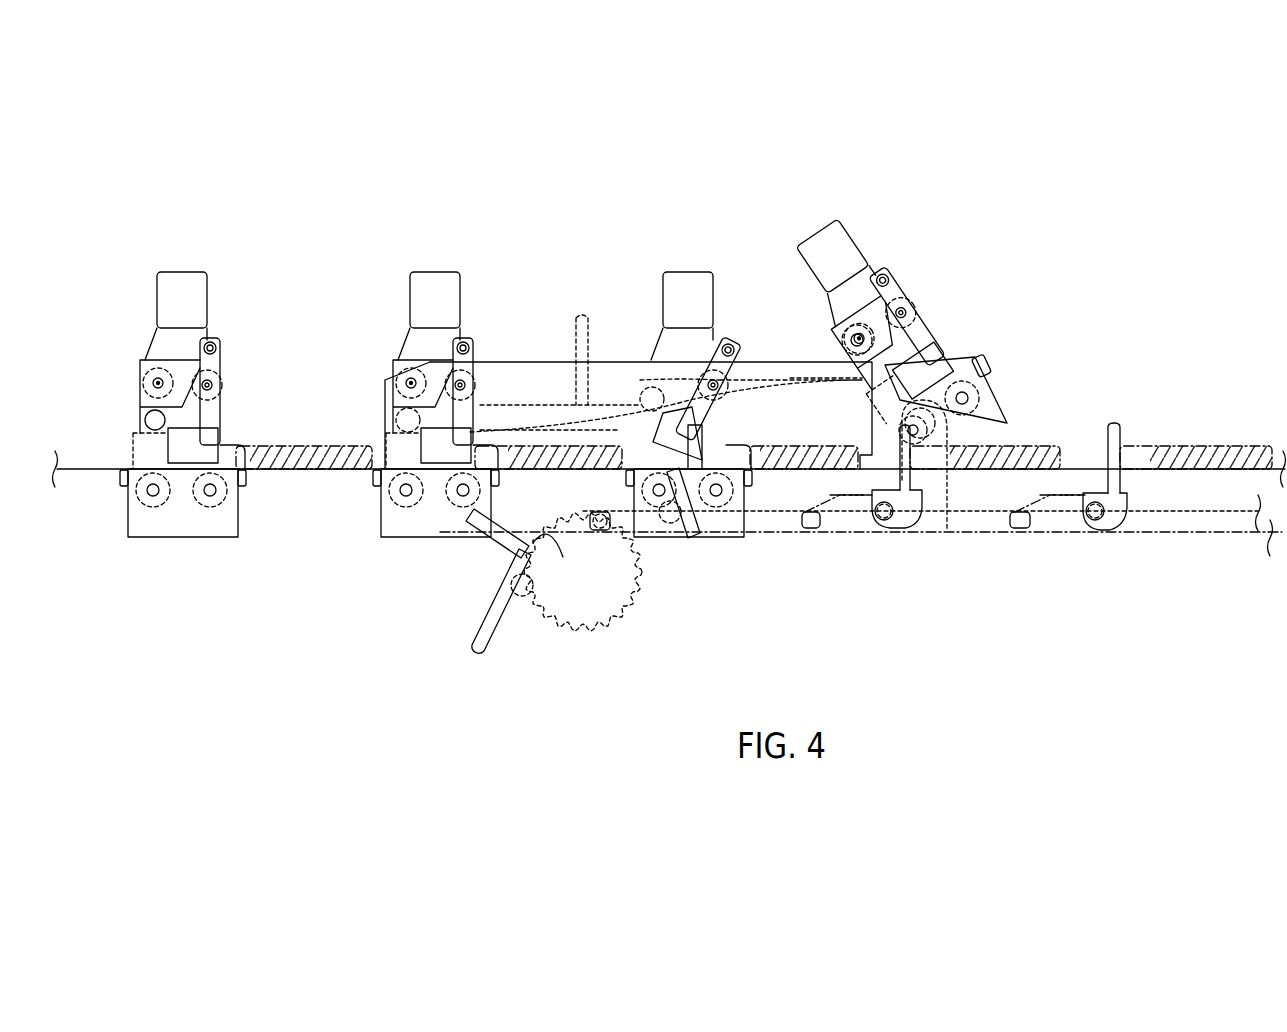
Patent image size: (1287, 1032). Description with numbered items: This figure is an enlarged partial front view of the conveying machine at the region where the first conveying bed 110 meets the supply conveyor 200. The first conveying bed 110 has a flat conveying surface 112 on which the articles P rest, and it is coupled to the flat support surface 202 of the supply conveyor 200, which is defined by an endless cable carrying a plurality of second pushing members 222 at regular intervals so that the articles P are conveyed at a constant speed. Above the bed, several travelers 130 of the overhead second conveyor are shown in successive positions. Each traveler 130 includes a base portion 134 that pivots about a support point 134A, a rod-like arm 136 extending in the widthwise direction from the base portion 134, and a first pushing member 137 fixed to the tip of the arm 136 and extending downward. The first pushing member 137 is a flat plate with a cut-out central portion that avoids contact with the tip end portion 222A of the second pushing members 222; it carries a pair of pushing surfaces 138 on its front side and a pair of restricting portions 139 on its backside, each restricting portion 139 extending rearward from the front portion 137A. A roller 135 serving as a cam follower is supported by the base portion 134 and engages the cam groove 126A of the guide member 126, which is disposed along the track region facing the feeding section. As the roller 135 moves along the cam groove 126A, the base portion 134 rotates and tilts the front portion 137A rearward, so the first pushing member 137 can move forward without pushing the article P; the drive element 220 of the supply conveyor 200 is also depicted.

The first conveying bed 110 is at (95, 467).
The conveying surface 112 is at (656, 434).
The guide member 126 is at (503, 370).
The cam groove 126A is at (578, 360).
The traveler 130 is at (182, 268).
The base portion 134 is at (200, 395).
The support point 134A is at (213, 383).
The roller 135 is at (143, 415).
The arm 136 is at (212, 342).
The first pushing member 137 is at (273, 594).
The front portion 137A is at (210, 490).
The pushing surfaces 138 is at (242, 448).
The restricting portions 139 is at (185, 465).
The supply conveyor 200 is at (861, 525).
The support surface 202 is at (861, 460).
The sprocket 220 is at (613, 627).
The second pushing members 222 is at (523, 553).
The tip end portion 222A is at (497, 493).
The articles P is at (285, 445).